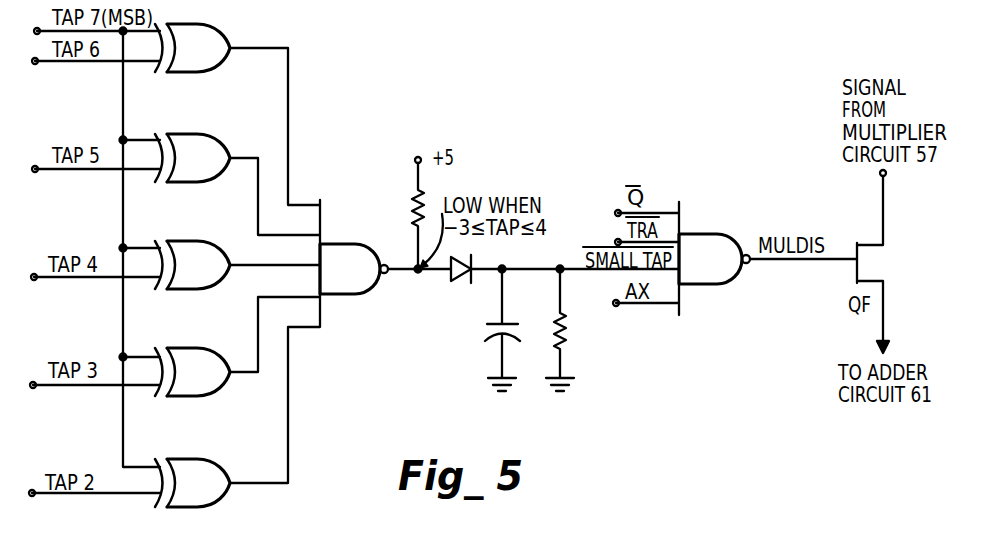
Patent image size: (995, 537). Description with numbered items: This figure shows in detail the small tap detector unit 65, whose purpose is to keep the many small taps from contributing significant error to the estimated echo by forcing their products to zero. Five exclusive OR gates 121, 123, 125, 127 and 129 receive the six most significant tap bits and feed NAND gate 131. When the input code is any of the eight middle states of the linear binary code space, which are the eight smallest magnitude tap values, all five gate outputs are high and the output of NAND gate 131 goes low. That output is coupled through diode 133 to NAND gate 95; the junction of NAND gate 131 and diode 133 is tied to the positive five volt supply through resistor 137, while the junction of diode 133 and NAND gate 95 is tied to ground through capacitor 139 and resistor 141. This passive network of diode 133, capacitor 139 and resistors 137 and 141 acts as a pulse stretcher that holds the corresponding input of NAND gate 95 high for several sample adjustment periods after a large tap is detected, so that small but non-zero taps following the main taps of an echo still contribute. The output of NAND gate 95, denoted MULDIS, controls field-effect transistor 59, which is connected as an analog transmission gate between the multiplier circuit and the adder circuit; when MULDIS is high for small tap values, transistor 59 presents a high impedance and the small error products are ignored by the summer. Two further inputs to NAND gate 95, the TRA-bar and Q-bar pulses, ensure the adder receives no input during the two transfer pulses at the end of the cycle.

The exclusive OR gate 121 is at (222, 27).
The exclusive OR gate 123 is at (208, 135).
The exclusive OR gate 125 is at (195, 240).
The exclusive OR gate 127 is at (189, 346).
The exclusive OR gate 129 is at (194, 458).
The NAND gate 131 is at (337, 243).
The diode 133 is at (448, 278).
The resistor 137 is at (412, 205).
The capacitor 139 is at (487, 327).
The resistor 141 is at (563, 335).
The NAND gate 95 is at (718, 234).
The field-effect transistor 59 is at (855, 274).
The small tap detector unit 65 is at (712, 420).